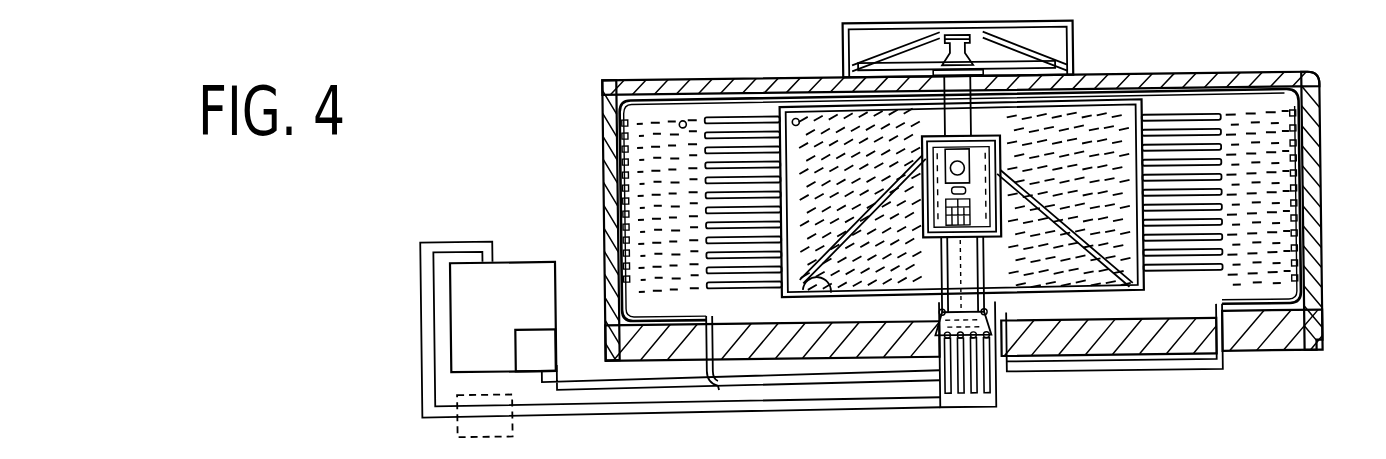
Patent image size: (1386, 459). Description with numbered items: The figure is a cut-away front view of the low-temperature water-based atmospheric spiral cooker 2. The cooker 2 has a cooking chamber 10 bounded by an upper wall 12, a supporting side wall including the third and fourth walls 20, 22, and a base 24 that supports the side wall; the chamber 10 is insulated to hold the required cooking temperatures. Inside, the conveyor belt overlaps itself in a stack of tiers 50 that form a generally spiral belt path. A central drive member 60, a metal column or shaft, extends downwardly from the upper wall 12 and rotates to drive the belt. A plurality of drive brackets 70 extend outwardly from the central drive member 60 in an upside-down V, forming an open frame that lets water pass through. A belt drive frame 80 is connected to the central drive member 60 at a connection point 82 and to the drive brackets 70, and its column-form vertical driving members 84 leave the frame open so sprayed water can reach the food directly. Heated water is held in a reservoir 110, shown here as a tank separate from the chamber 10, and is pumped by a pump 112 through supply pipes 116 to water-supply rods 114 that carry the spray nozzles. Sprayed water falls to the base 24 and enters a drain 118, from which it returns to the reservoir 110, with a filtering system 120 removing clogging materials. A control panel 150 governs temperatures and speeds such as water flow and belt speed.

The atmospheric cooker 2 is at (1101, 42).
The cooking chamber 10 is at (1210, 75).
The upper wall 12 is at (1156, 76).
The third wall 20 is at (605, 96).
The fourth wall 22 is at (1322, 147).
The base 24 is at (1244, 333).
The tiers 50 is at (1222, 150).
The central drive member 60 is at (966, 130).
The drive brackets 70 is at (1041, 173).
The belt drive frame 80 is at (795, 100).
The connection point 82 is at (943, 114).
The vertical driving members 84 is at (778, 135).
The reservoir of heated water 110 is at (503, 317).
The pump 112 is at (542, 359).
The water-supply rods 114 is at (605, 177).
The supply pipes 116 is at (708, 374).
The drain 118 is at (951, 327).
The filtering system 120 is at (455, 396).
The control panel 150 is at (921, 154).